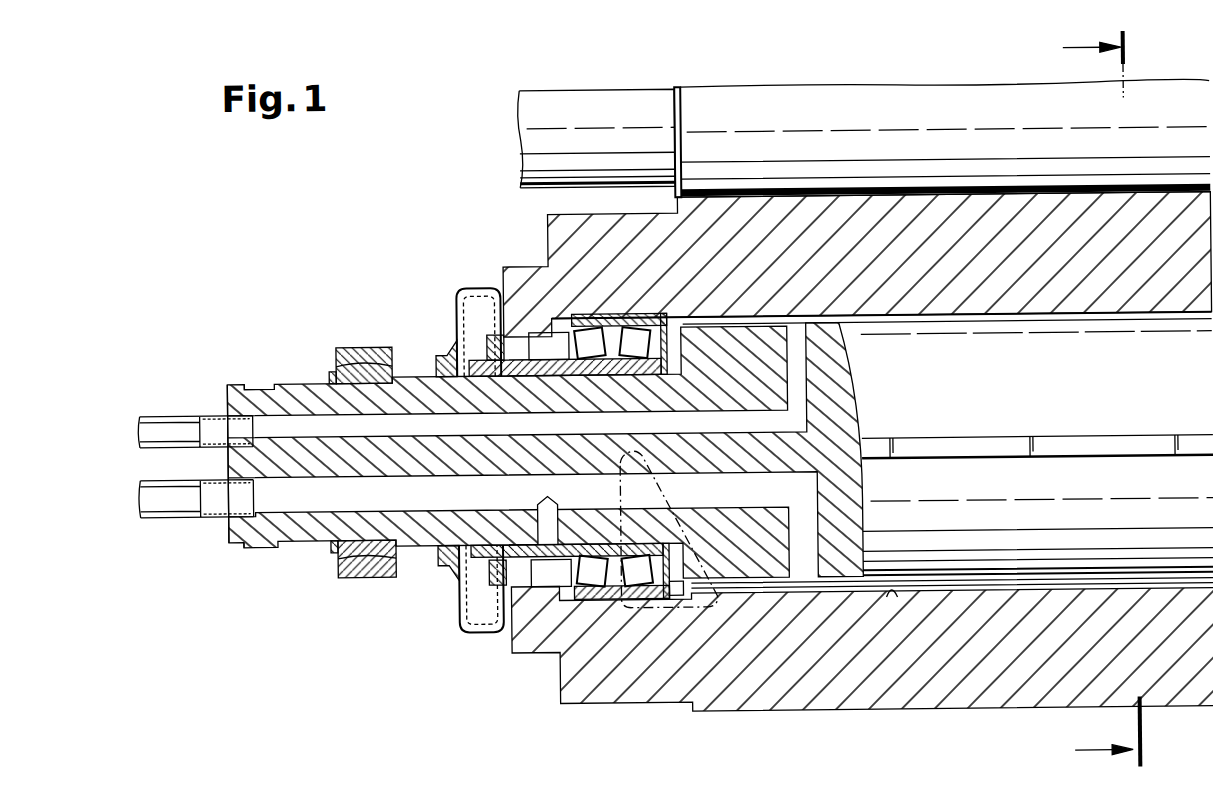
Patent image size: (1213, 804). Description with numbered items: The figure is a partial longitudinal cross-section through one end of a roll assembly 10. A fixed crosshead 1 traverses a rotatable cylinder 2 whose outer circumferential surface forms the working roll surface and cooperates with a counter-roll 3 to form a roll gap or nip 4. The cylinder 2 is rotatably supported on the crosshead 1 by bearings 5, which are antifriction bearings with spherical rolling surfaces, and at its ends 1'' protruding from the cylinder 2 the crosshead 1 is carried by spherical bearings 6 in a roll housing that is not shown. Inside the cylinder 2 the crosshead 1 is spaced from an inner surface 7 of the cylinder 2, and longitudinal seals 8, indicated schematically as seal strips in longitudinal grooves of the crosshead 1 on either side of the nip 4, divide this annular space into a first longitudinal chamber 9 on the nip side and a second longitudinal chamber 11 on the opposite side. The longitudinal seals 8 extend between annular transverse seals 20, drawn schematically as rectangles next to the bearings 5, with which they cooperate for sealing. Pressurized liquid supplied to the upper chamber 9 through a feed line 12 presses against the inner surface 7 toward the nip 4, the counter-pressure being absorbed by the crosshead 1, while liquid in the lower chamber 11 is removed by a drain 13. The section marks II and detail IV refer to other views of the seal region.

The crosshead 1 is at (625, 452).
The ends of crosshead 1'' is at (262, 499).
The rotatable cylinder 2 is at (575, 255).
The counter-roll 3 is at (540, 111).
The roll gap or nip 4 is at (672, 197).
The bearings 5 is at (602, 600).
The spherical bearings 6 is at (363, 574).
The inner surface of cylinder 7 is at (893, 600).
The longitudinal seals 8 is at (1093, 449).
The first longitudinal chamber 9 is at (935, 322).
The roll assembly 10 is at (322, 271).
The second longitudinal chamber 11 is at (982, 587).
The feed line 12 is at (166, 422).
The drain 13 is at (170, 500).
The transverse seals 20 is at (690, 600).
The detail IV is at (658, 612).
The section line II- II is at (1115, 401).